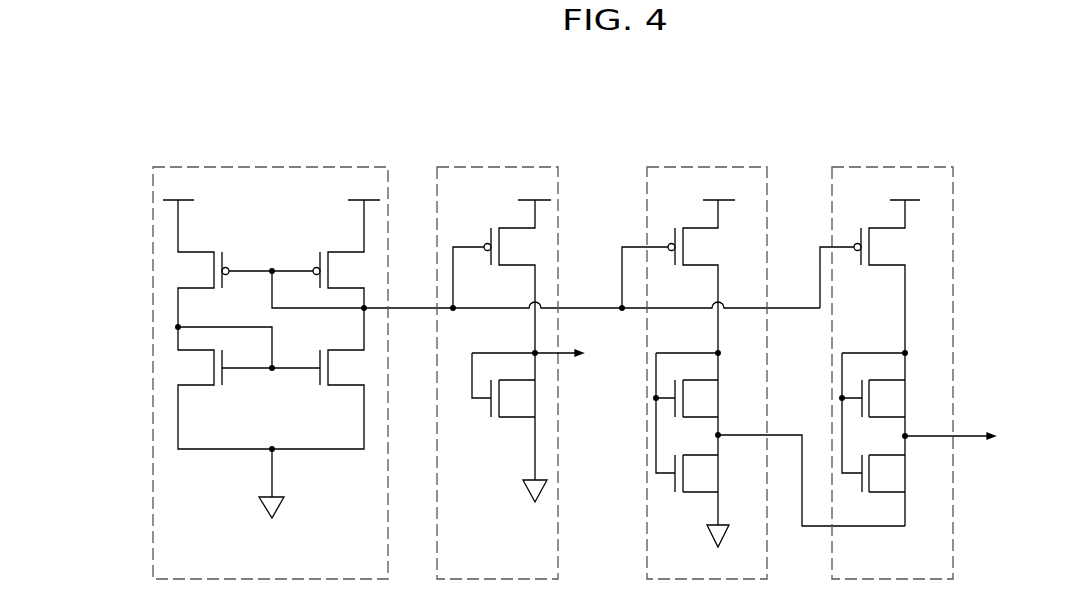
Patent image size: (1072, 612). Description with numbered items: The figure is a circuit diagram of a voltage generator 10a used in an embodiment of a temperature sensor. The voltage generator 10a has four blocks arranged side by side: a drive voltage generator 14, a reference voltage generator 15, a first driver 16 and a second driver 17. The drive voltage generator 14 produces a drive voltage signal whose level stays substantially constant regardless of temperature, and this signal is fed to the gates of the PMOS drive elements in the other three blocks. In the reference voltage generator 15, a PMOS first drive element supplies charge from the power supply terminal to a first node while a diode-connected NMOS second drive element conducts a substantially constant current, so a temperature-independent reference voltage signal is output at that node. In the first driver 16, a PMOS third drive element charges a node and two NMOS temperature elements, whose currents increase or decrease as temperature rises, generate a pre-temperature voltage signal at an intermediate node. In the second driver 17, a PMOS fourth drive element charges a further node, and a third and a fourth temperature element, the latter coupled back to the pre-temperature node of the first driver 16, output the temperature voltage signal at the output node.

The voltage generator 10a is at (983, 80).
The drive voltage generator 14 is at (398, 181).
The reference voltage generator 15 is at (566, 181).
The first driver 16 is at (749, 168).
The second driver 17 is at (933, 168).